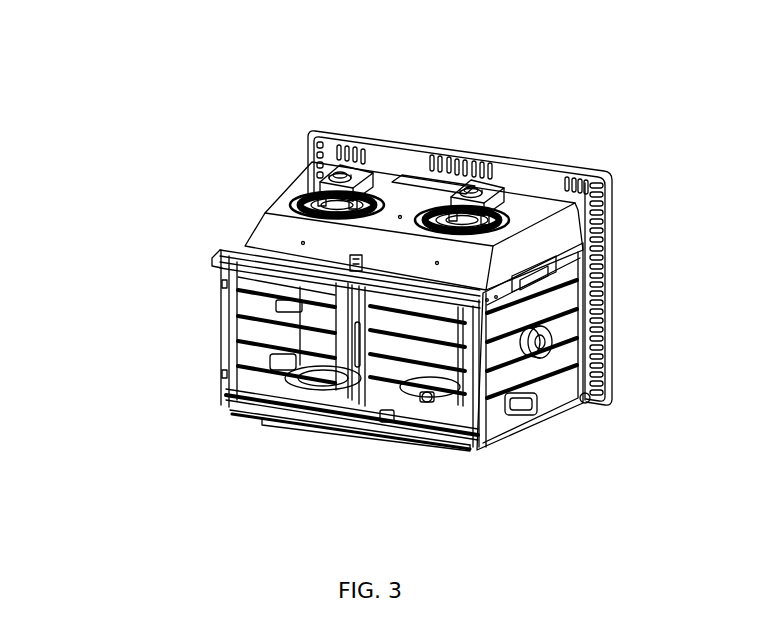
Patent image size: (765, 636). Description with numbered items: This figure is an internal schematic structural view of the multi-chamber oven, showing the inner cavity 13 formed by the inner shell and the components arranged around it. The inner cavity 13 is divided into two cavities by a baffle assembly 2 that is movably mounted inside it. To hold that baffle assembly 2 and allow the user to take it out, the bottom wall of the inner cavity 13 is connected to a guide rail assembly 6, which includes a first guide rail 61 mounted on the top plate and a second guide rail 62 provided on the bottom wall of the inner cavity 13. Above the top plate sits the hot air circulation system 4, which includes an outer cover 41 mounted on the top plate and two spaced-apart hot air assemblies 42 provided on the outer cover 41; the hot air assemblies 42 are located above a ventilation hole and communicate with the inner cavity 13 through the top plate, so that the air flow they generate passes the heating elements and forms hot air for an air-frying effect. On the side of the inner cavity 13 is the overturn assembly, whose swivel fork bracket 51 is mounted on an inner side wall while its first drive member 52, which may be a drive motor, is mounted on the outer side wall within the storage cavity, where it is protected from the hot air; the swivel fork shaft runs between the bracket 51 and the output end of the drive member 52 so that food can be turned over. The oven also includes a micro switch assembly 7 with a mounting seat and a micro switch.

The baffle assembly 2 is at (324, 412).
The hot air circulation system 4 is at (665, 51).
The guide rail assembly 6 is at (426, 398).
The micro switch assembly 7 is at (316, 172).
The inner cavity 13 is at (228, 282).
The outer cover 41 is at (555, 212).
The hot air assembly 42 is at (353, 167).
The swivel fork bracket 51 is at (250, 338).
The first drive member 52 is at (580, 402).
The first guide rail 61 is at (357, 262).
The second guide rail 62 is at (383, 416).